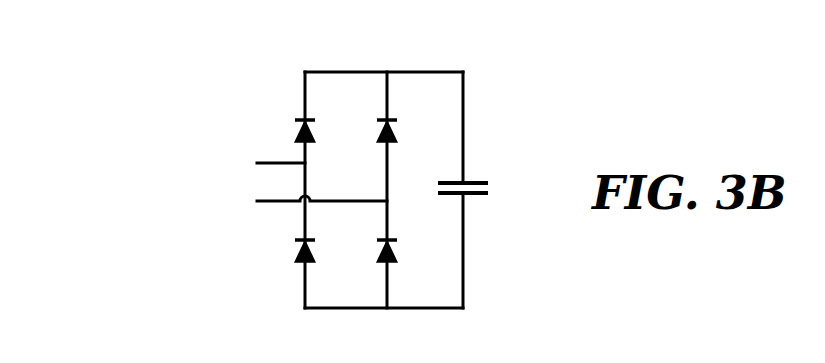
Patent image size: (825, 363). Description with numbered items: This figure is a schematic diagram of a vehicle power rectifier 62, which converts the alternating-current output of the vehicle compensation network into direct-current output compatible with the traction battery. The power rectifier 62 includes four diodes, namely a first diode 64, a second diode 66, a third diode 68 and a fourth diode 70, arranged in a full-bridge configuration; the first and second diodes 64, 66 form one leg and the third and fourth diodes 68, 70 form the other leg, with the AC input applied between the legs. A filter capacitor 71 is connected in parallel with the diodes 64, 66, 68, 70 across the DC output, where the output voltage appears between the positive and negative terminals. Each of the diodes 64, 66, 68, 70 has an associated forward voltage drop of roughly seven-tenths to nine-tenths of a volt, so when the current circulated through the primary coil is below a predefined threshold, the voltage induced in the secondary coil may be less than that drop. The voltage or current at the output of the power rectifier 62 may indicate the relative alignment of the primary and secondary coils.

The power rectifier 62 is at (207, 56).
The diode D1 64 is at (303, 117).
The diode D2 66 is at (303, 237).
The diode D3 68 is at (385, 117).
The diode D4 70 is at (385, 237).
The filter capacitor 71 is at (455, 180).